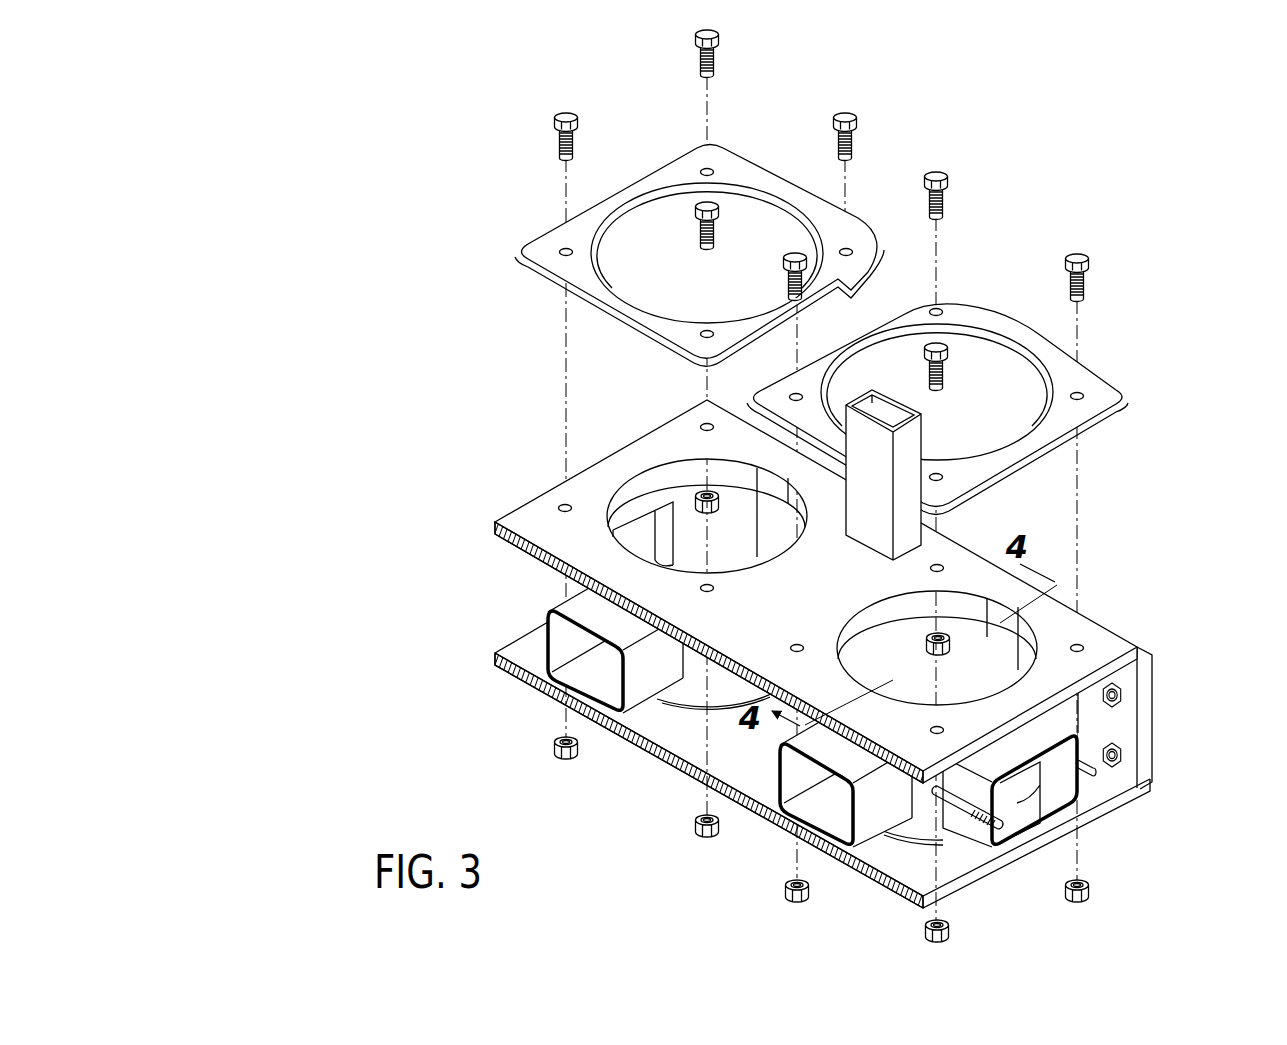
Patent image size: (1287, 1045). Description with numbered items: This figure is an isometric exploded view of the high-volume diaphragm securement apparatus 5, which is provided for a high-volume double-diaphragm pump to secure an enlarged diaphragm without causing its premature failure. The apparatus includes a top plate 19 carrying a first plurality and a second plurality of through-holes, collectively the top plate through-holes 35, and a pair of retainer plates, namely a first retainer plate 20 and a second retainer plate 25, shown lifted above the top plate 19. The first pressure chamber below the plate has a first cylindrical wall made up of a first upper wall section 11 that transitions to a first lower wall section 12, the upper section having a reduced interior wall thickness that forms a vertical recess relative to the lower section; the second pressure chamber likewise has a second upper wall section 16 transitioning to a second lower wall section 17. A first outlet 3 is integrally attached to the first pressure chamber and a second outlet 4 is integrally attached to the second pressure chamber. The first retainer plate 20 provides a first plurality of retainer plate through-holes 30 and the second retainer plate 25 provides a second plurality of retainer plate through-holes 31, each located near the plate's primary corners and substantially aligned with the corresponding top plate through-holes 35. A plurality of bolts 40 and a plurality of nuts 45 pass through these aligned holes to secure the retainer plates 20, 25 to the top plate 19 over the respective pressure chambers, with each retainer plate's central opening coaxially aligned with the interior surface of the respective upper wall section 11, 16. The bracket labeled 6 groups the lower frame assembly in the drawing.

The first outlet 3 is at (833, 828).
The second outlet 4 is at (607, 695).
The diaphragm securement apparatus 5 is at (367, 133).
The frame 6 is at (1240, 630).
The first upper wall section 11 is at (897, 613).
The first lower wall section 12 is at (880, 653).
The second upper wall section 16 is at (633, 490).
The second lower wall section 17 is at (683, 503).
The top plate 19 is at (543, 527).
The first retainer plate 20 is at (1116, 393).
The second retainer plate 25 is at (760, 177).
The first plurality of retainer plate through-holes 30 is at (1079, 392).
The second plurality of retainer plate through-holes 31 is at (847, 246).
The top plate through-holes 35 is at (1077, 648).
The bolts 40 is at (1077, 252).
The nuts 45 is at (1105, 930).